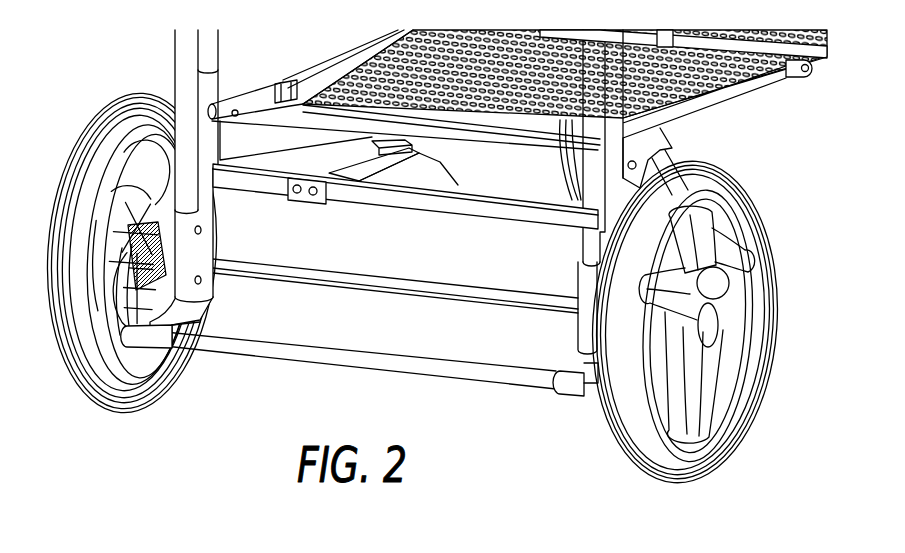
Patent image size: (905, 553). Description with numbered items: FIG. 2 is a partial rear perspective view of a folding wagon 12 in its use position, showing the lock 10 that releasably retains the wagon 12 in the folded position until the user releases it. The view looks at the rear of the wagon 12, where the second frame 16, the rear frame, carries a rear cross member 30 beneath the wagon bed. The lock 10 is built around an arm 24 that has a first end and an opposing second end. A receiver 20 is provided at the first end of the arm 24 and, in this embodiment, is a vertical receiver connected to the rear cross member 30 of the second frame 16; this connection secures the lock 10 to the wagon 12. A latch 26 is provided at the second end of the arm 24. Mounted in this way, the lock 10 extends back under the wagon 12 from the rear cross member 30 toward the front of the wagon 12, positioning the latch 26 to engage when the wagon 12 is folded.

The lock 10 is at (389, 166).
The folding wagon 12 is at (131, 432).
The second frame 16 is at (220, 48).
The receiver 20 is at (300, 197).
The arm 24 is at (357, 170).
The latch 26 is at (412, 147).
The rear cross member 30 is at (503, 213).